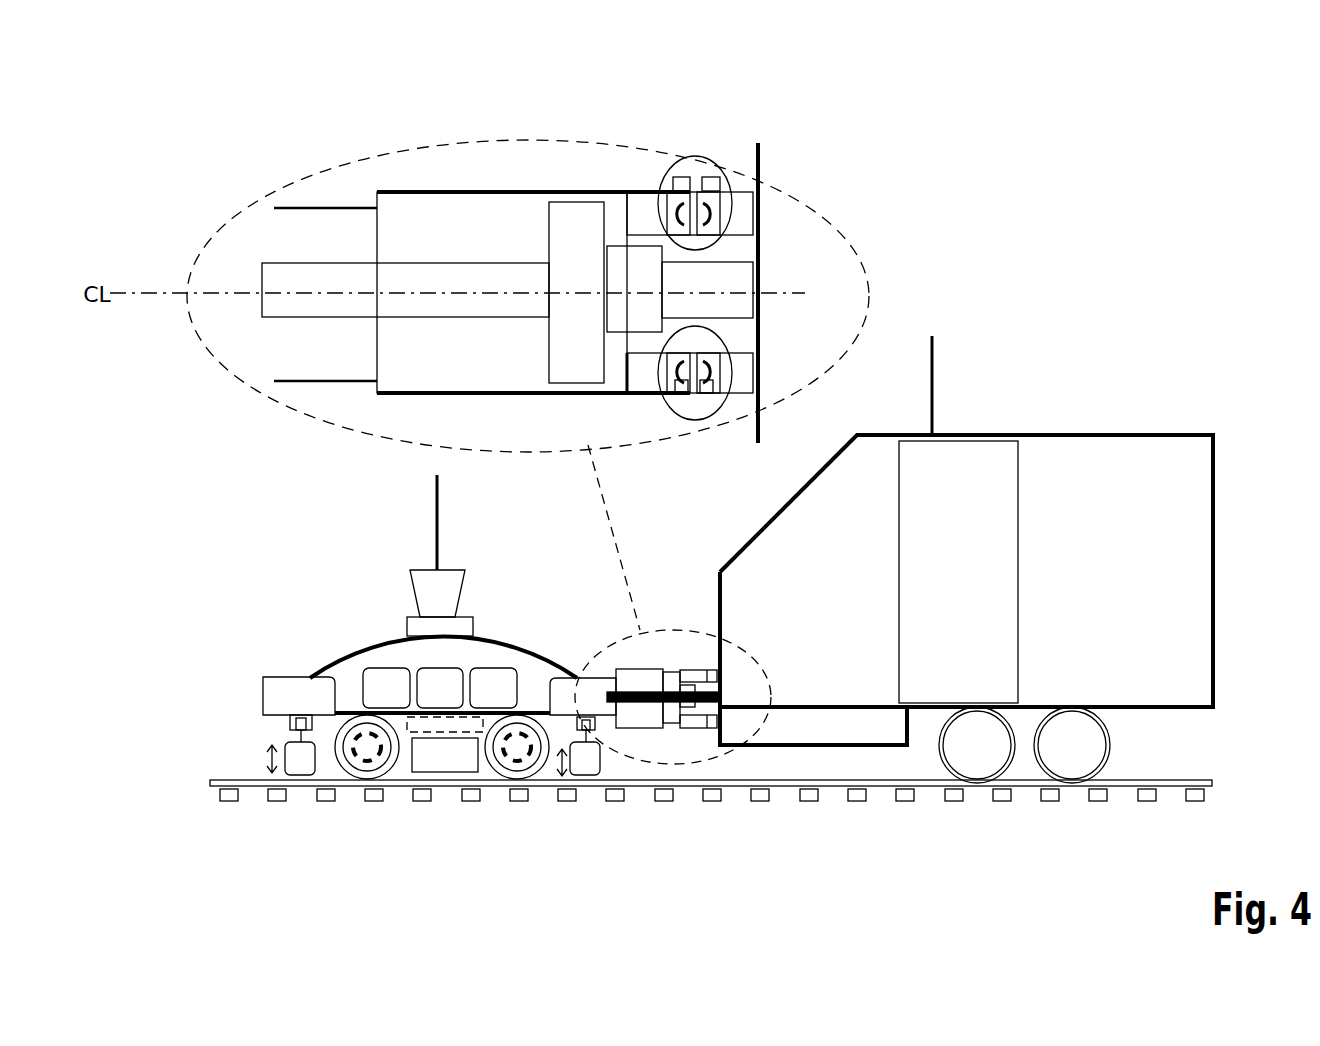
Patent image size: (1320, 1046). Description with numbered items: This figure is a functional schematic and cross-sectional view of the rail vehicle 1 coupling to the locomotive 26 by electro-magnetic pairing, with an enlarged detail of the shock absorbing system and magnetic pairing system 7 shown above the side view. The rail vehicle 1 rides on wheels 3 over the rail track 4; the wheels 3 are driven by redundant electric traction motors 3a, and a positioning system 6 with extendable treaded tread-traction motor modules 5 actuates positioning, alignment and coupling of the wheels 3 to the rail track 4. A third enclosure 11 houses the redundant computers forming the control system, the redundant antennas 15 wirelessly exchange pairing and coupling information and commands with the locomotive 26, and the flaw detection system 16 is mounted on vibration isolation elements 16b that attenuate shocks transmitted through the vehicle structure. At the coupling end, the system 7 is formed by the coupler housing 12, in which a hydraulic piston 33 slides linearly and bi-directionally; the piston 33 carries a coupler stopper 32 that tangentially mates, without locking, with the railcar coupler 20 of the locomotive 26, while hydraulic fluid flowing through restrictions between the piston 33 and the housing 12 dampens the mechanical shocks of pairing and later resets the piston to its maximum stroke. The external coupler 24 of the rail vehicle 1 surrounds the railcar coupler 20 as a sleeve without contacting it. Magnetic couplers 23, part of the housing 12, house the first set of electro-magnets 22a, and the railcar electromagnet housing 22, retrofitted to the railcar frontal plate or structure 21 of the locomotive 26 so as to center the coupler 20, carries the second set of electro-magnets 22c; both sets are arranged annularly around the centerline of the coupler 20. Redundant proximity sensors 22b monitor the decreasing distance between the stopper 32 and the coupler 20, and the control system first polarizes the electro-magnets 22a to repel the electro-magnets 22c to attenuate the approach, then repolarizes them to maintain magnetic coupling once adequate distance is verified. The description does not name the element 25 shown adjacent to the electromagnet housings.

The rail vehicle 1 is at (276, 553).
The wheels 3 is at (367, 782).
The electric traction motors 3a is at (512, 763).
The rail track 4 is at (237, 782).
The tread-traction motor modules 5 is at (300, 762).
The positioning system 6 is at (290, 718).
The shock absorbing system and magnetic pairing system 7 is at (435, 190).
The third enclosure 11 is at (498, 690).
The coupler housing 12 is at (295, 202).
The redundant antennas 15 is at (435, 535).
The flaw detection system 16 is at (445, 760).
The vibration isolation elements 16b is at (458, 730).
The railcar coupler 20 is at (730, 290).
The railcar frontal plate or structure 21 is at (760, 164).
The railcar electromagnet housing 22 is at (737, 190).
The first set of electro-magnets 22a is at (682, 388).
The proximity sensors 22b is at (708, 177).
The second set of electro-magnets 22c is at (705, 393).
The magnetic couplers 23 is at (649, 378).
The external coupler 24 is at (473, 192).
The clamp ring 25 is at (732, 375).
The locomotive 26 is at (1059, 432).
The coupler stopper 32 is at (566, 223).
The hydraulic piston 33 is at (297, 290).